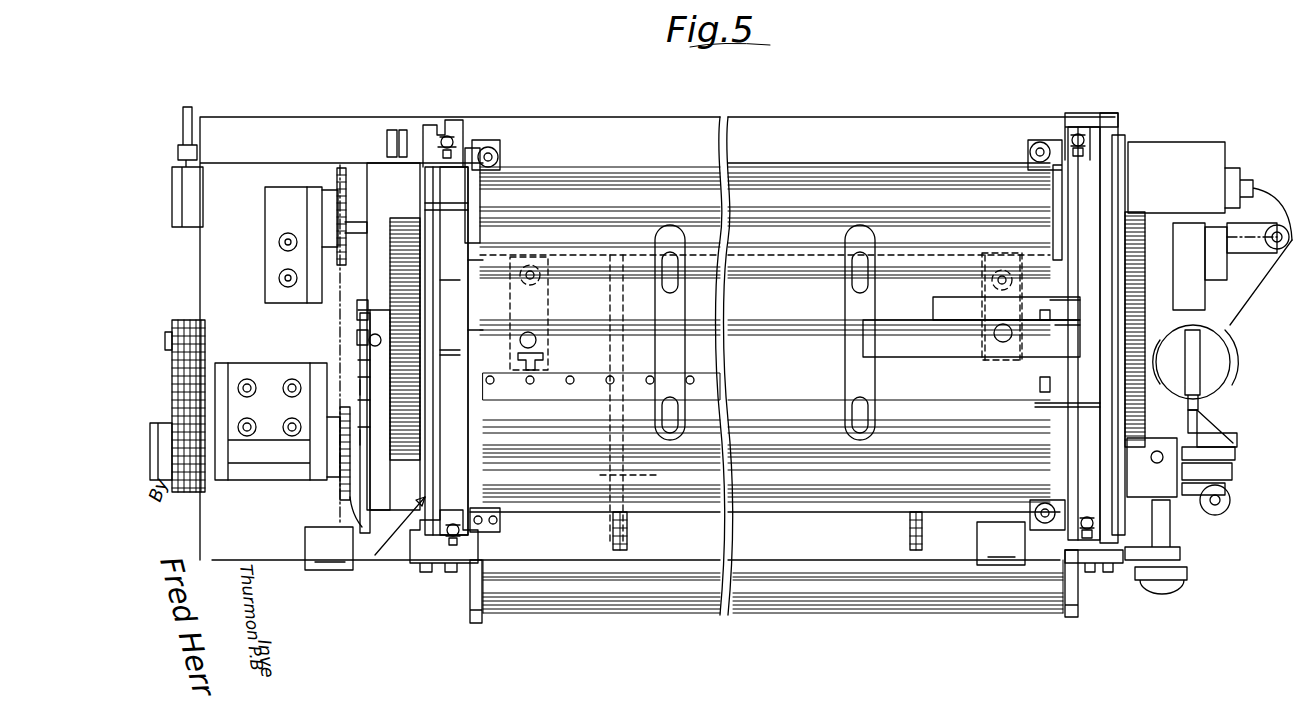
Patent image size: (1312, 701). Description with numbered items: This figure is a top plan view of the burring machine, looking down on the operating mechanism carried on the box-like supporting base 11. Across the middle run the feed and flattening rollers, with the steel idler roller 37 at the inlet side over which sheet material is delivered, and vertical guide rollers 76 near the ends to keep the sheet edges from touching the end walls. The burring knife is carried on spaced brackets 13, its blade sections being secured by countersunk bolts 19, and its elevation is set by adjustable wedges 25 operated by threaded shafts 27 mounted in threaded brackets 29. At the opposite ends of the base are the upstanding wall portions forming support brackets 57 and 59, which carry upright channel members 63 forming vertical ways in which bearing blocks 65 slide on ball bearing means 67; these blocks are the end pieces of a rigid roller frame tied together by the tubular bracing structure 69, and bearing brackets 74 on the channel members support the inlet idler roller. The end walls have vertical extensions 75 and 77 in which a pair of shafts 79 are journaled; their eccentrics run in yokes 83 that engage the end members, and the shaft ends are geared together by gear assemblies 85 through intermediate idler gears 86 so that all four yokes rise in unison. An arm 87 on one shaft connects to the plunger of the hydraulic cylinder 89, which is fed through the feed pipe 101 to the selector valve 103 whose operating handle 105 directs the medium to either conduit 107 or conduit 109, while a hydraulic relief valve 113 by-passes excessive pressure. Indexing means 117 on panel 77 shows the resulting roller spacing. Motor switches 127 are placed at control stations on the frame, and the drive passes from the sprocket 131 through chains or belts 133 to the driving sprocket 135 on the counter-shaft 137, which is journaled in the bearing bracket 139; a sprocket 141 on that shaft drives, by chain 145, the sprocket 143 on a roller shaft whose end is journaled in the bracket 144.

The supporting base 11 is at (256, 125).
The spaced brackets 13 is at (548, 300).
The countersunk bolts 19 is at (585, 370).
The adjustable wedges 25 is at (585, 384).
The threaded shafts 27 is at (628, 530).
The threaded brackets 29 is at (930, 476).
The idler roller 37 is at (840, 612).
The support bracket 57 is at (395, 541).
The support bracket 59 is at (1130, 190).
The upstanding supports 63 is at (445, 135).
The bearing blocks 65 is at (440, 182).
The ball bearing means 67 is at (455, 143).
The tubular bracing and spacing structure 69 is at (662, 292).
The bearing brackets 74 is at (470, 620).
The vertical extension 75 is at (428, 318).
The vertical guide rollers 76 is at (1032, 520).
The vertical extension 77 is at (1100, 408).
The shafts 79 is at (757, 265).
The yokes 83 is at (442, 214).
The gear assemblies 85 is at (393, 200).
The intermediate idler gear 86 is at (370, 352).
The arm 87 is at (1195, 322).
The hydraulic cylinder 89 is at (1222, 363).
The feed pipe 101 is at (1232, 470).
The selector valve 103 is at (1168, 500).
The operating handle 105 is at (1168, 580).
The conduit 107 is at (1200, 420).
The conduit 109 is at (1235, 438).
The hydraulic relief valve 113 is at (1225, 512).
The indexing means 117 is at (900, 330).
The switches 127 is at (318, 570).
The sprocket 131 is at (178, 320).
The chains or belts 133 is at (172, 372).
The driving sprocket 135 is at (165, 404).
The counter-shaft 137 is at (277, 421).
The bearing bracket 139 is at (302, 485).
The sprocket 141 is at (373, 520).
The sprocket 143 is at (338, 168).
The bracket 144 is at (283, 207).
The chain 145 is at (358, 326).